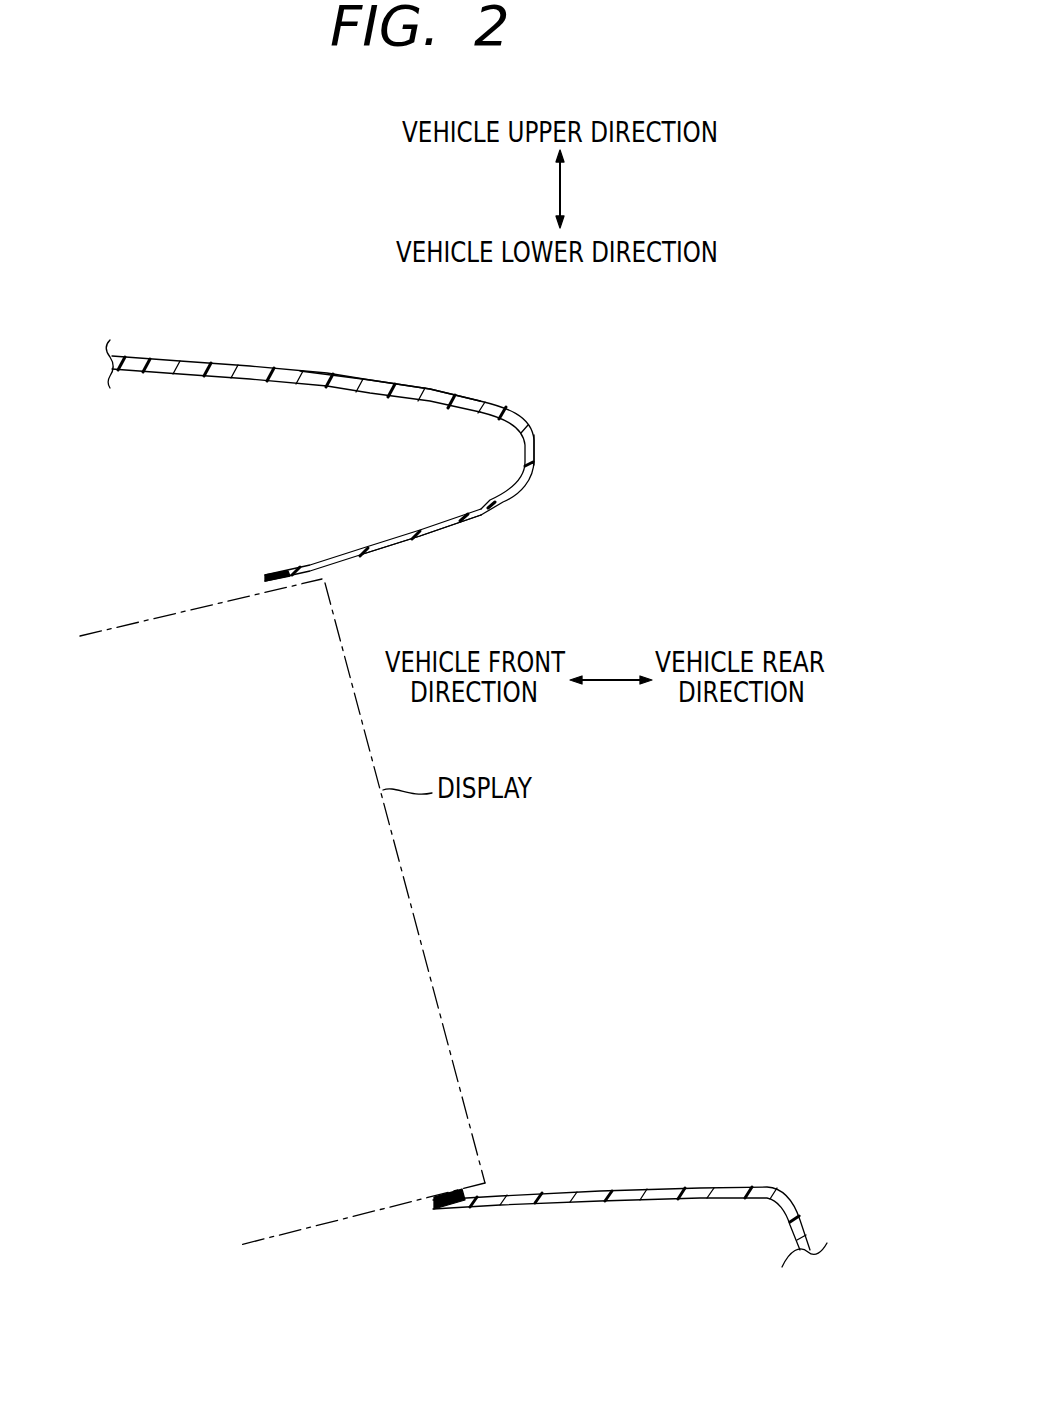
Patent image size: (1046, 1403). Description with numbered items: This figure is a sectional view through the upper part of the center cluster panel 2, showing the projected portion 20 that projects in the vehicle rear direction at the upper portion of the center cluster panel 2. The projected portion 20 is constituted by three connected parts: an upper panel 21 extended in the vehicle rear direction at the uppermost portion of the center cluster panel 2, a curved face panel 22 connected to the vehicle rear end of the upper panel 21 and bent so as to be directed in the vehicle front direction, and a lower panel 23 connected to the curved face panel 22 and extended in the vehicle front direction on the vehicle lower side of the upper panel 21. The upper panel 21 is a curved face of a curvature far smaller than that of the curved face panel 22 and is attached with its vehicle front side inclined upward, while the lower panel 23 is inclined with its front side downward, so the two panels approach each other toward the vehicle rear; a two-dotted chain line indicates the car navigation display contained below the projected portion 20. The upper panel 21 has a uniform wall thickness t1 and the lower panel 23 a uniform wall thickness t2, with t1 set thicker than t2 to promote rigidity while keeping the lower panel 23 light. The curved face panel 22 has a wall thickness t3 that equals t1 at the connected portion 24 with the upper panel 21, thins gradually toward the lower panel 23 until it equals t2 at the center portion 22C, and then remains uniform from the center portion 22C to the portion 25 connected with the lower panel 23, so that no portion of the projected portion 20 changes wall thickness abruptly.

The center cluster panel 2 is at (145, 315).
The projected portion 20 is at (558, 360).
The upper panel 21 is at (263, 364).
The curved face panel 22 is at (534, 414).
The center portion 22C is at (548, 462).
The lower panel 23 is at (423, 534).
The connected portion 24 is at (450, 375).
The portion connected with the lower panel 25 is at (452, 543).
The wall thickness of the upper panel t1 is at (318, 420).
The wall thickness of the lower panel t2 is at (347, 518).
The wall thickness of the curved face panel t3 is at (525, 370).